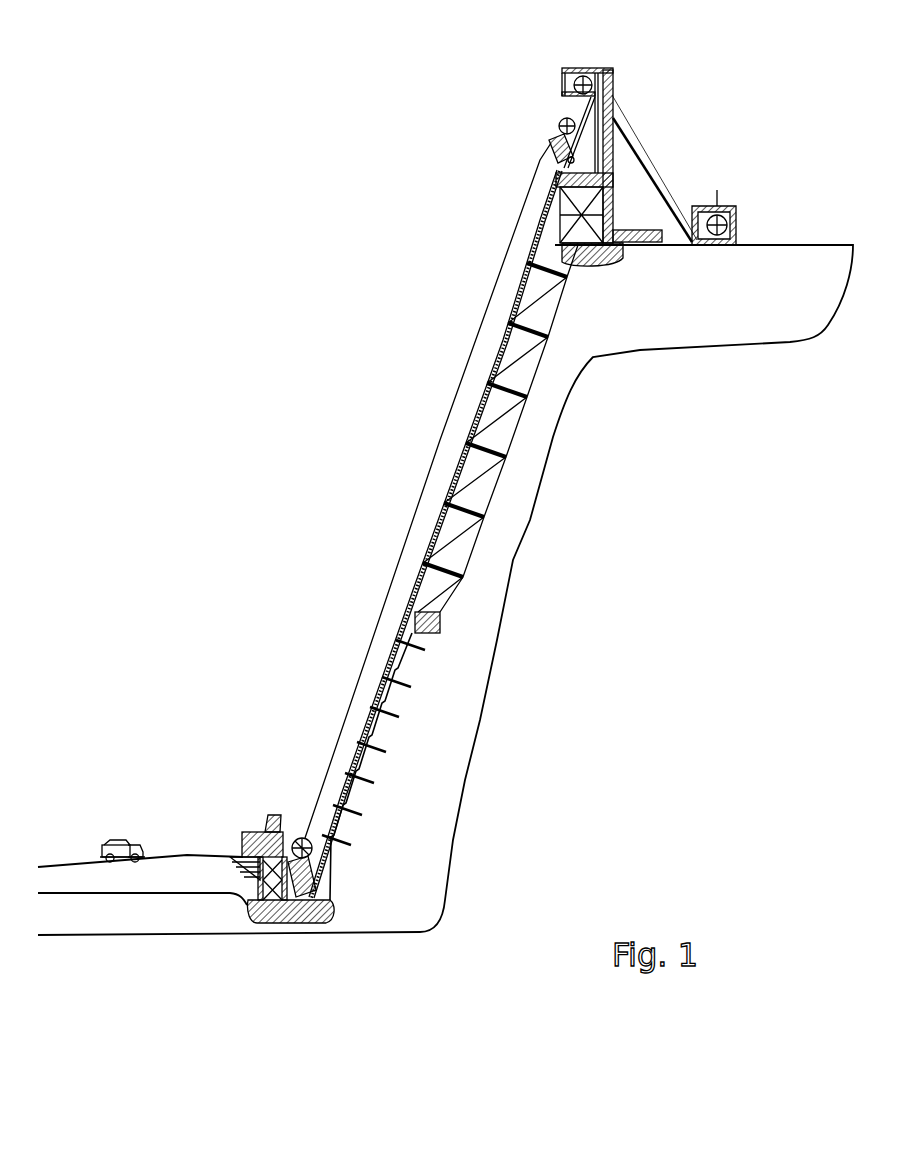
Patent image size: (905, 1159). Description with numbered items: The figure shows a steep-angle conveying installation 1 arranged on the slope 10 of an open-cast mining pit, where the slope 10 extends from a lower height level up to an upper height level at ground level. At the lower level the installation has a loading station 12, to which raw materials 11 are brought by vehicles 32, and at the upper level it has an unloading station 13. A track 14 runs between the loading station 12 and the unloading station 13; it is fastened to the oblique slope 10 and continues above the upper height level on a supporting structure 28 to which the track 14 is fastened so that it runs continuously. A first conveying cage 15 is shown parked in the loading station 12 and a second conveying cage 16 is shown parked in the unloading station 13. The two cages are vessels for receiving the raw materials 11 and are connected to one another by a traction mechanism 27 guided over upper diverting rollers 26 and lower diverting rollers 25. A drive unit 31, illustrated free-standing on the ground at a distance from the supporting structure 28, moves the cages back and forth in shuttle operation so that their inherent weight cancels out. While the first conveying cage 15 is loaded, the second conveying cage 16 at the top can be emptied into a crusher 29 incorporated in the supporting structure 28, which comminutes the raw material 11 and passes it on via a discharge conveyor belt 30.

The steep-angle conveying installation 1 is at (338, 432).
The slope 10 is at (590, 360).
The raw materials 11 is at (551, 148).
The loading station 12 is at (273, 818).
The unloading station 13 is at (545, 166).
The track 14 is at (460, 475).
The first conveying cage 15 is at (297, 906).
The second conveying cage 16 is at (562, 163).
The lower diverting rollers 25 is at (561, 124).
The upper diverting rollers 26 is at (575, 80).
The traction mechanism 27 is at (708, 196).
The supporting structure 28 is at (613, 70).
The crusher 29 is at (607, 160).
The discharge conveyor belt 30 is at (633, 228).
The drive unit 31 is at (740, 232).
The vehicles 32 is at (140, 837).